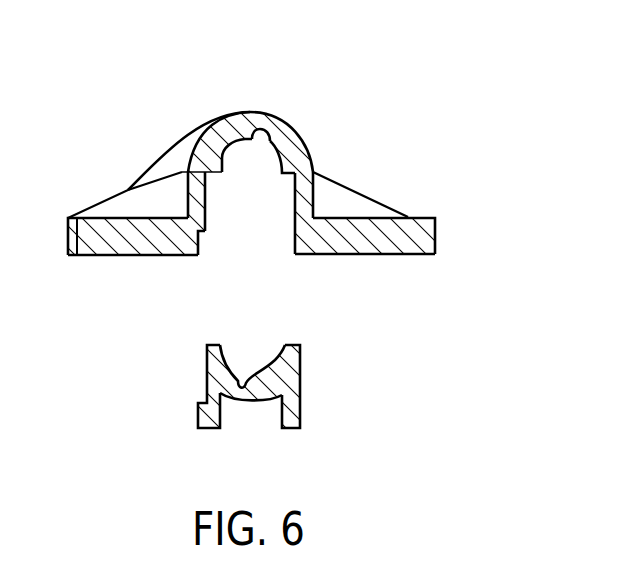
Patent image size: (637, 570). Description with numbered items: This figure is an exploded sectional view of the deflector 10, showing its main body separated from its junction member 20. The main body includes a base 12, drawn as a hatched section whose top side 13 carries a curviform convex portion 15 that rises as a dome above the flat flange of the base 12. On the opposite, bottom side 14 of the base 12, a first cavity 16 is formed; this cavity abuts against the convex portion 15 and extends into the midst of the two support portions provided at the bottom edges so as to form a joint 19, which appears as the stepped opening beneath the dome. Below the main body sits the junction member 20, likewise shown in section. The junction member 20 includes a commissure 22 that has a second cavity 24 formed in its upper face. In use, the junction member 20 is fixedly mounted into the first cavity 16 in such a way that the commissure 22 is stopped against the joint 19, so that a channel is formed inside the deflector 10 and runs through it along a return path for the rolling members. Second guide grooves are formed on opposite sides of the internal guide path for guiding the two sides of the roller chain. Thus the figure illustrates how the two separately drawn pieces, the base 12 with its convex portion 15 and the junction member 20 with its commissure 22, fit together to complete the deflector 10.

The deflector 10 is at (298, 163).
The base 12 is at (437, 233).
The top side 13 is at (350, 218).
The bottom side 14 is at (382, 255).
The curviform convex portion 15 is at (280, 114).
The first cavity 16 is at (215, 205).
The joint 19 is at (288, 177).
The junction member 20 is at (248, 407).
The commissure 22 is at (215, 347).
The second cavity 24 is at (272, 363).